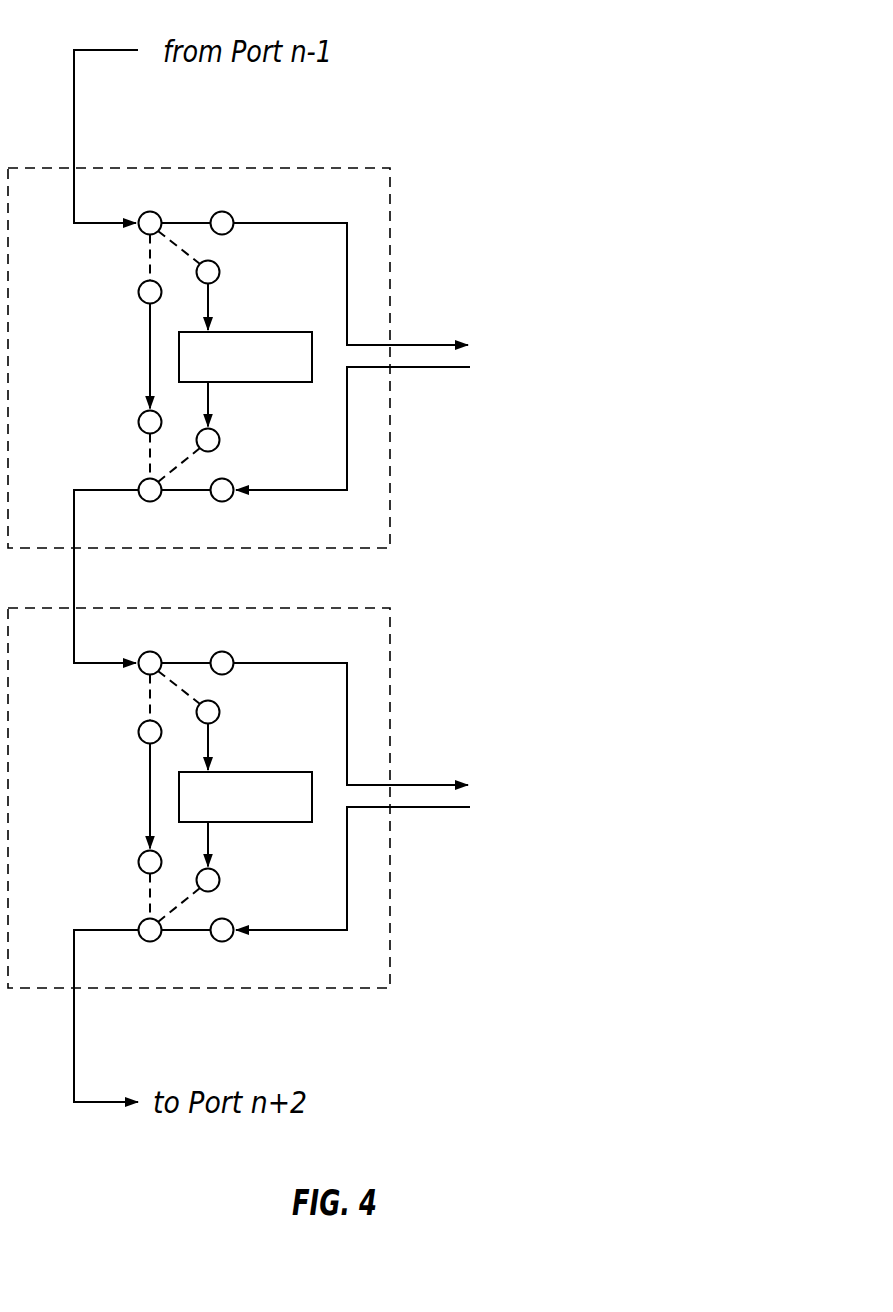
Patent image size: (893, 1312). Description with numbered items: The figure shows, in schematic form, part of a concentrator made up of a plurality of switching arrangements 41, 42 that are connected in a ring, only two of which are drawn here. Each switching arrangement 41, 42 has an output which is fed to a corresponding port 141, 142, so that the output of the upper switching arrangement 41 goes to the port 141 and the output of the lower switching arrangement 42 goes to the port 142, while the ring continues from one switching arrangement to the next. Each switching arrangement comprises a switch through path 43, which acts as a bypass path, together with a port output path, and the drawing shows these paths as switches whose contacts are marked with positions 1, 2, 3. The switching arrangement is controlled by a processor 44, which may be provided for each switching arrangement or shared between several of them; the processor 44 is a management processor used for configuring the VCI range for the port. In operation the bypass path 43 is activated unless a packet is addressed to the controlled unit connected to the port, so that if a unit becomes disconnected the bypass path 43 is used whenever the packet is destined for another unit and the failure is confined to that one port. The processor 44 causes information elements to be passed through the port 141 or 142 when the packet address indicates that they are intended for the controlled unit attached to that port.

The switching arrangement 41 is at (363, 167).
The switching arrangement 42 is at (363, 607).
The switch through path 43 is at (179, 357).
The processor 44 is at (264, 332).
The port 141 is at (525, 337).
The port 142 is at (547, 780).
The switch position 1 is at (220, 577).
The switch position 2 is at (222, 577).
The switch position 3 is at (137, 578).